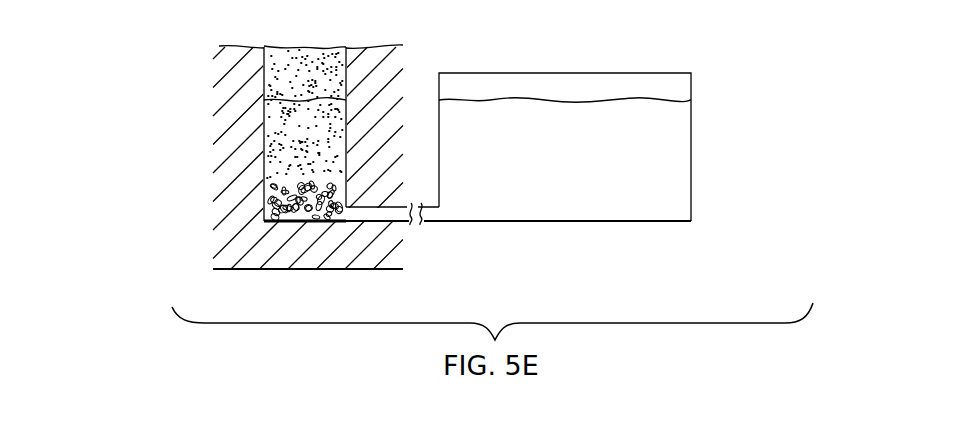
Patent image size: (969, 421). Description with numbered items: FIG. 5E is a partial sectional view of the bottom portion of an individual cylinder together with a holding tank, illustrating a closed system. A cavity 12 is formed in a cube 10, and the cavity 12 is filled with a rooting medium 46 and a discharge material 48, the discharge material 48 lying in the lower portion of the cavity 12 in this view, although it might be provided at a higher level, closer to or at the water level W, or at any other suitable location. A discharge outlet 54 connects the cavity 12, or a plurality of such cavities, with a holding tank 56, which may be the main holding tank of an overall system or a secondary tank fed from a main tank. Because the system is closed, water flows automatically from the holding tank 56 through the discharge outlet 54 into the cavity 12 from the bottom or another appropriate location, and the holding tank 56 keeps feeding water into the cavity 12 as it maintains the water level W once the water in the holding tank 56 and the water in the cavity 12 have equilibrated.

The cube 10 is at (208, 108).
The cavity 12 is at (316, 48).
The rooting medium 46 is at (290, 143).
The discharge material 48 is at (270, 211).
The discharge outlet 54 is at (390, 215).
The holding tank 56 is at (692, 137).
The water level W is at (720, 99).